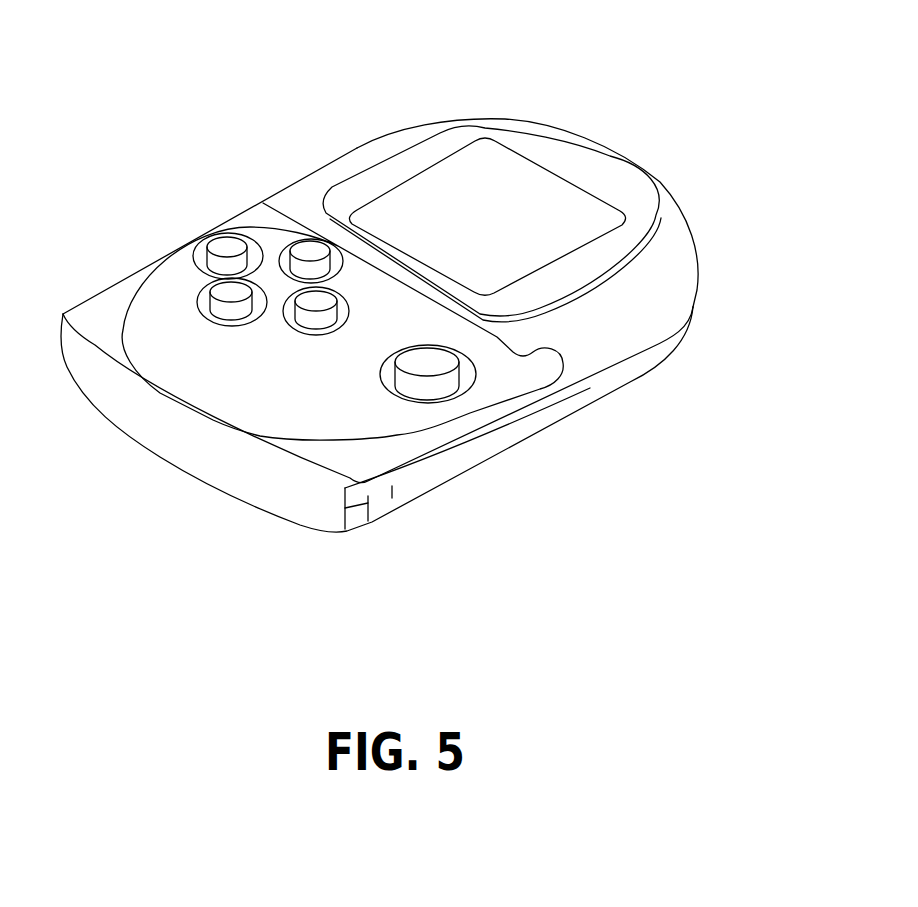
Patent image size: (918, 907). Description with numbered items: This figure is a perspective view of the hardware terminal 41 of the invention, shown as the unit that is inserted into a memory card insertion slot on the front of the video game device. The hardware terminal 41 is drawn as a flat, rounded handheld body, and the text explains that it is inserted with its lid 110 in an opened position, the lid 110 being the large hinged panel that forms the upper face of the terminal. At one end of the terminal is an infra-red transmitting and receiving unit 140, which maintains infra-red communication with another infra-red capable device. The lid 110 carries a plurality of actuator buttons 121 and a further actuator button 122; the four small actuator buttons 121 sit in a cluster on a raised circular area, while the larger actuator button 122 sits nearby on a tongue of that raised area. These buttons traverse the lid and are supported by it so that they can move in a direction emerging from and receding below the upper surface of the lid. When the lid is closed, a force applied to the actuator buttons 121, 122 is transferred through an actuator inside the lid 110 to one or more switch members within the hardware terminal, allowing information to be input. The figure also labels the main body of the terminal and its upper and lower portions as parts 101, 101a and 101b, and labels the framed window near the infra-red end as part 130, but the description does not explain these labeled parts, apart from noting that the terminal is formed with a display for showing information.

The hardware terminal 41 is at (550, 114).
The housing 101 is at (706, 288).
The upper housing 101a is at (630, 337).
The lower housing 101b is at (623, 370).
The lid 110 is at (447, 432).
The actuator buttons 121 is at (313, 302).
The actuator button 122 is at (443, 367).
The display 130 is at (444, 146).
The infra-red transmitting and receiving unit 140 is at (652, 154).